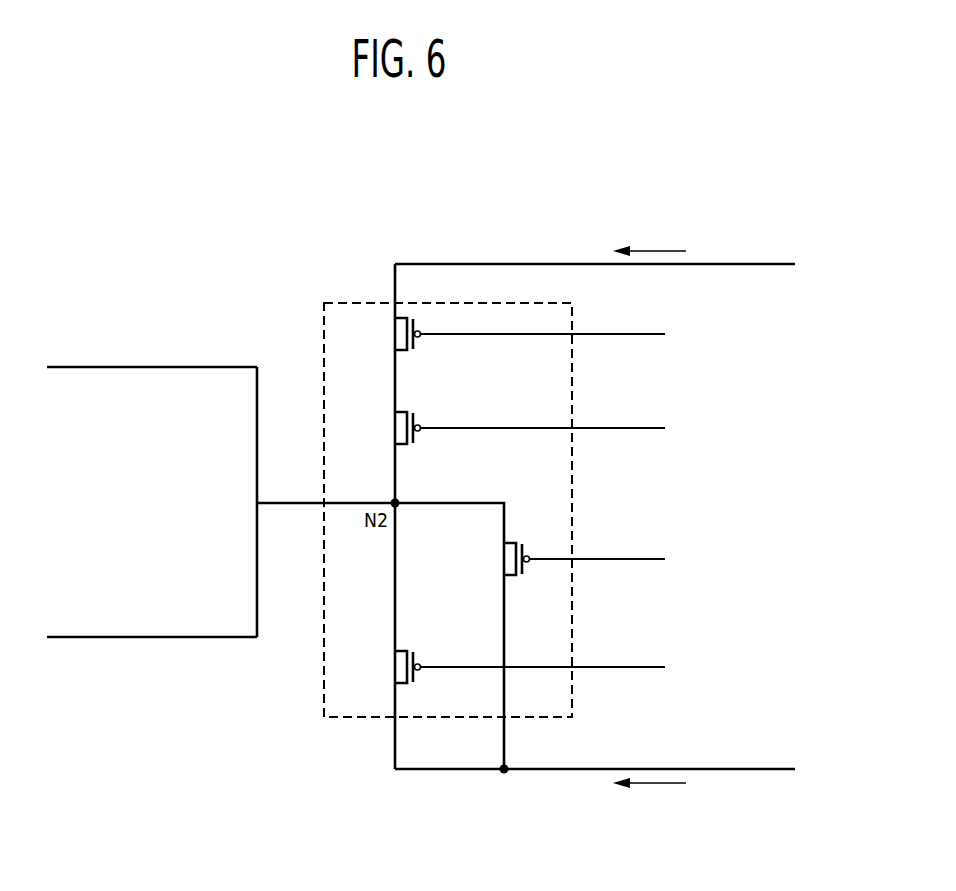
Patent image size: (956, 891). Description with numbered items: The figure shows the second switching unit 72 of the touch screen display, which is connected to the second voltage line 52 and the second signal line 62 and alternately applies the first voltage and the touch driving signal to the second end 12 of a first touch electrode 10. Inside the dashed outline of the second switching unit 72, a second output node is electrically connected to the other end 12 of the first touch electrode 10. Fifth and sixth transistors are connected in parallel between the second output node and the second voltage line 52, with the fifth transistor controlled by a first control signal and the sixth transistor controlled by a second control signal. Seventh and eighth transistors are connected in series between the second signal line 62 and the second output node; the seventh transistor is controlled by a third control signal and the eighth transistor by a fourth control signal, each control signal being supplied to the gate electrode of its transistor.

The first touch electrode 10 is at (200, 367).
The second end of the first touch electrode 12 is at (257, 380).
The second switching unit 72 is at (345, 303).
The second signal line 62 is at (776, 264).
The second voltage line 52 is at (753, 769).